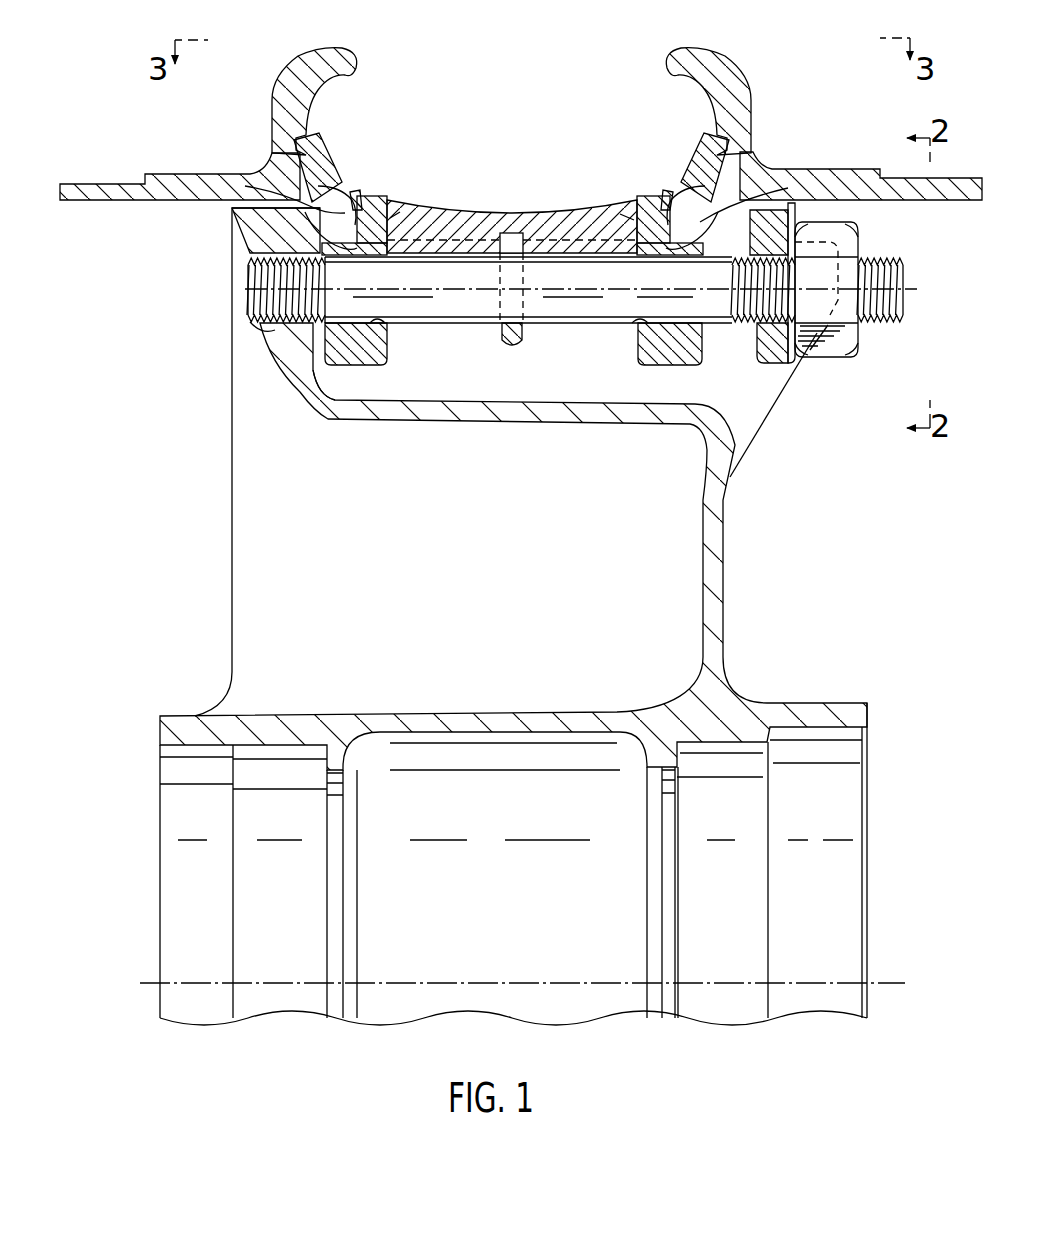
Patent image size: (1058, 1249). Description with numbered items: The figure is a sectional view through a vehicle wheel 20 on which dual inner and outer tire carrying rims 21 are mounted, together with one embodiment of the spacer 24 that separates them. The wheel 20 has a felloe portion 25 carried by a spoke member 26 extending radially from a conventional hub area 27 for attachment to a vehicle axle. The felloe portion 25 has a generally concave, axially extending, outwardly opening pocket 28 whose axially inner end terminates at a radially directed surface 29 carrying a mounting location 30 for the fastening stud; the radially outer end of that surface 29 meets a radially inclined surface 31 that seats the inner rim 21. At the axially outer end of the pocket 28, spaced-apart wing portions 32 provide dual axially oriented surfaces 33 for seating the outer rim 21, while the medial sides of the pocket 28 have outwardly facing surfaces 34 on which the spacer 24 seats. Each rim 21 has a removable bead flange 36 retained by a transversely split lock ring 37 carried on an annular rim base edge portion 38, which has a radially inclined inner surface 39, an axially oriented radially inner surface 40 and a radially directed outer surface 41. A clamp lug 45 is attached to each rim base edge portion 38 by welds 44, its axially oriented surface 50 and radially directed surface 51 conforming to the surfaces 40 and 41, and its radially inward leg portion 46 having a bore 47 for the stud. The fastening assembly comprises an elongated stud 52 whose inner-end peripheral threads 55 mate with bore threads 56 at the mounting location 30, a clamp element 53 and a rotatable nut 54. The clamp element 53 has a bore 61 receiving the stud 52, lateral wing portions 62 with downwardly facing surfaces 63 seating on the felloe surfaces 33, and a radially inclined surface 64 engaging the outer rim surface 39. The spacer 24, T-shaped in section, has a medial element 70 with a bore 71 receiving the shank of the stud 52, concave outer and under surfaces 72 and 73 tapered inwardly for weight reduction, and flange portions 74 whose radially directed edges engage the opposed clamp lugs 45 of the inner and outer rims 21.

The wheel 20 is at (899, 582).
The tire carrying rims 21 is at (250, 90).
The spacer 24 is at (555, 196).
The felloe portion 25 is at (213, 370).
The spoke member 26 is at (248, 557).
The hub area 27 is at (512, 883).
The pocket 28 is at (564, 403).
The radially directed surface 29 is at (330, 365).
The mounting location 30 is at (216, 283).
The radially inclined surface 31 is at (236, 174).
The wing portions 32 is at (780, 384).
The axially oriented surfaces 33 is at (842, 240).
The axially oriented surfaces 34 is at (466, 206).
The removable bead flange 36 is at (318, 62).
The lock ring 37 is at (318, 152).
The rim base edge portion 38 is at (350, 192).
The radially inclined axially inner surface 39 is at (232, 218).
The axially oriented radially inner surface 40 is at (327, 255).
The radially directed axially outer surface 41 is at (380, 205).
The welds 44 is at (357, 195).
The clamp lug 45 is at (381, 369).
The leg portion 46 is at (387, 345).
The bore 47 is at (380, 322).
The axially oriented surface 50 is at (388, 255).
The radially directed surface 51 is at (345, 212).
The elongated stud 52 is at (545, 322).
The clamp element 53 is at (765, 355).
The rotatable nut 54 is at (845, 357).
The peripheral threads 55 is at (246, 302).
The bore threads 56 is at (253, 322).
The bore 61 is at (780, 320).
The lateral wing portions 62 is at (752, 238).
The axially oriented surfaces 63 is at (718, 228).
The radially inclined surface 64 is at (772, 172).
The medial element 70 is at (507, 232).
The bore 71 is at (500, 330).
The concave outer surface 72 is at (537, 208).
The concave under surface 73 is at (553, 243).
The flange portions 74 is at (410, 212).